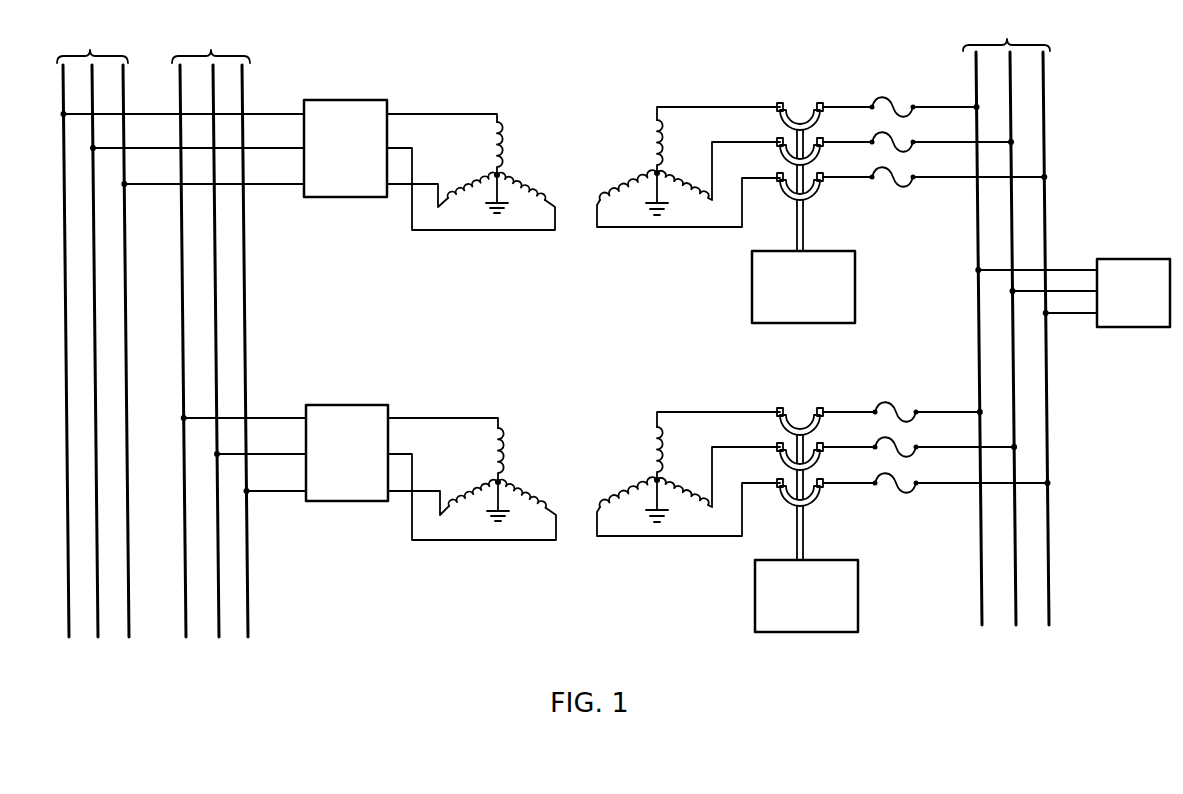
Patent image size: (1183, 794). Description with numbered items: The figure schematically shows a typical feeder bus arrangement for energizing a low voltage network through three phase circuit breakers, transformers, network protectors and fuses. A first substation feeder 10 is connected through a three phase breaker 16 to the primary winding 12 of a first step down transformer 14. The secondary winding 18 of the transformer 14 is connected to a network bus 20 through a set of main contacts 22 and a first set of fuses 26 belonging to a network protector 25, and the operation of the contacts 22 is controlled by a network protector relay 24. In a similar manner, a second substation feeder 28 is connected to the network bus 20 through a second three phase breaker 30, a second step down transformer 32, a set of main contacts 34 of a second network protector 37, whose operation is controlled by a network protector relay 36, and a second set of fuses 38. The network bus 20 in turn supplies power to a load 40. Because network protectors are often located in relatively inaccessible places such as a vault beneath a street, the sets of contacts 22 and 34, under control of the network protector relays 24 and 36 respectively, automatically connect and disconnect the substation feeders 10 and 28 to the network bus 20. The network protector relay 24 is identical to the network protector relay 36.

The first substation feeder 10 is at (78, 44).
The second substation feeder 28 is at (200, 44).
The network bus 20 is at (995, 31).
The three phase breaker 16 is at (357, 100).
The first step down transformer 14 is at (586, 117).
The primary winding 12 is at (490, 168).
The secondary winding 18 is at (665, 170).
The main contacts 22 is at (790, 100).
The network protector 25 is at (856, 86).
The first set of fuses 26 is at (898, 101).
The network protector relay 24 is at (838, 250).
The load 40 is at (1138, 259).
The second three phase breaker 30 is at (361, 405).
The second step down transformer 32 is at (586, 430).
The main contacts 34 is at (790, 408).
The second network protector 37 is at (861, 400).
The second set of fuses 38 is at (905, 412).
The network protector relay 36 is at (834, 560).